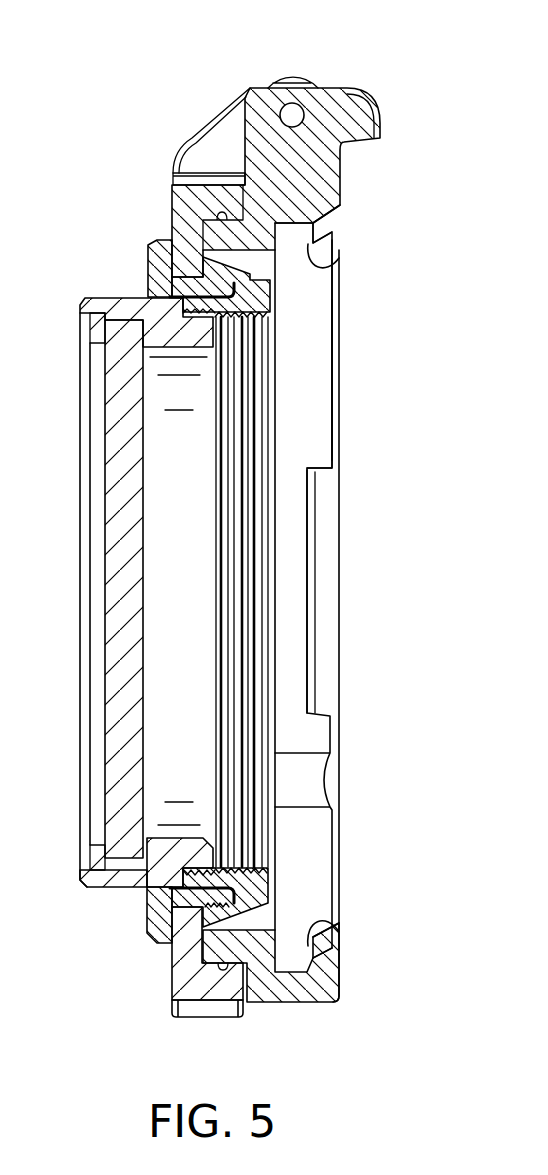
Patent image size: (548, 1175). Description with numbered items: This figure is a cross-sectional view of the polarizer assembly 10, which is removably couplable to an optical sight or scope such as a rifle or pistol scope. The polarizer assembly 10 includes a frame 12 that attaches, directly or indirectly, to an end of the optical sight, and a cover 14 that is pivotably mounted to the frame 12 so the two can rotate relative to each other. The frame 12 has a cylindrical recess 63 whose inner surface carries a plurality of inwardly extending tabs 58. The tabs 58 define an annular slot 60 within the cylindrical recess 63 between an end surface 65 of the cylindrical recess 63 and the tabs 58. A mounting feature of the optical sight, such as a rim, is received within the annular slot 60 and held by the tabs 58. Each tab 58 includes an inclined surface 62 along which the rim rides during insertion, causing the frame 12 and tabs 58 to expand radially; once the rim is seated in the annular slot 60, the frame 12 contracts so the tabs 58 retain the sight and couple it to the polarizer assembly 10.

The polarizer assembly 10 is at (245, 542).
The frame 12 is at (285, 570).
The cover 14 is at (208, 1020).
The tabs 58 is at (322, 268).
The annular slot 60 is at (287, 225).
The inclined surface 62 is at (330, 222).
The cylindrical recess 63 is at (322, 353).
The end surface 65 is at (272, 432).